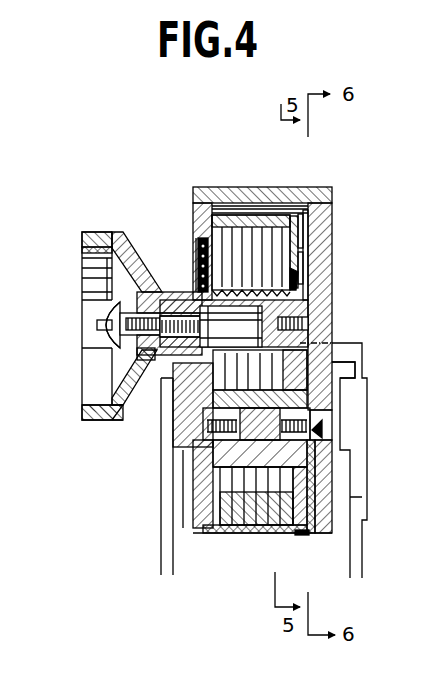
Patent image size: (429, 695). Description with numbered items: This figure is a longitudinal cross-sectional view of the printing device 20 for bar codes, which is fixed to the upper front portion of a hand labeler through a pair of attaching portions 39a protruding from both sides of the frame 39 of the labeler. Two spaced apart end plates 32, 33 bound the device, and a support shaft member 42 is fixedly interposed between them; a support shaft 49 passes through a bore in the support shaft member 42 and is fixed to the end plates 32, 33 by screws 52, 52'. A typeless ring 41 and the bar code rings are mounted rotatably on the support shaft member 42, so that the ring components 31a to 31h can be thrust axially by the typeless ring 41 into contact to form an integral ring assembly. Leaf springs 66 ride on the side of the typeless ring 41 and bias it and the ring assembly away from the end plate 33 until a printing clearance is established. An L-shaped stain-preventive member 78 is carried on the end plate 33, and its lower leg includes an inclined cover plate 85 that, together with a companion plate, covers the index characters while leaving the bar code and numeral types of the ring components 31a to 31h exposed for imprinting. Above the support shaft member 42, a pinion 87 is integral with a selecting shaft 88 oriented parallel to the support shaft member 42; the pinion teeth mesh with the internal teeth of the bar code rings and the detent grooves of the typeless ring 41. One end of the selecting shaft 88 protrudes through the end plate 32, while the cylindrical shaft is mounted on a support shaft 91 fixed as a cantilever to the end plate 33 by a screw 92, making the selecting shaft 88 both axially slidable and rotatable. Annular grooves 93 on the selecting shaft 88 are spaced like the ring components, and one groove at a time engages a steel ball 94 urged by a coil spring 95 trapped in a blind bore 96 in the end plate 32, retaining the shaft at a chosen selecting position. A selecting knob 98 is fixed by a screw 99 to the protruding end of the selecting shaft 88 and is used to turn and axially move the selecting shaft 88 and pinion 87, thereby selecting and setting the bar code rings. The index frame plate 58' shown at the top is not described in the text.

The printing device 20 is at (358, 172).
The ring component 31a is at (215, 535).
The ring component 31h is at (270, 535).
The end plate 32 is at (203, 195).
The end plate 33 is at (308, 233).
The frame 39 is at (314, 186).
The attaching portions 39a is at (363, 373).
The typeless ring 41 is at (300, 225).
The support shaft member 42 is at (192, 468).
The support shaft 49 is at (337, 452).
The screw 52 is at (166, 417).
The screw 52' is at (310, 421).
The cover plate 58' is at (262, 179).
The leaf springs 66 is at (310, 252).
The stain-preventive member 78 is at (322, 512).
The cover plate 85 is at (302, 537).
The pinion 87 is at (332, 285).
The selecting shaft 88 is at (148, 360).
The support shaft 91 is at (328, 305).
The screw 92 is at (330, 330).
The annular grooves 93 is at (238, 255).
The steel ball 94 is at (198, 280).
The coil spring 95 is at (197, 235).
The blind bore 96 is at (200, 253).
The selecting knob 98 is at (85, 283).
The screw 99 is at (92, 350).